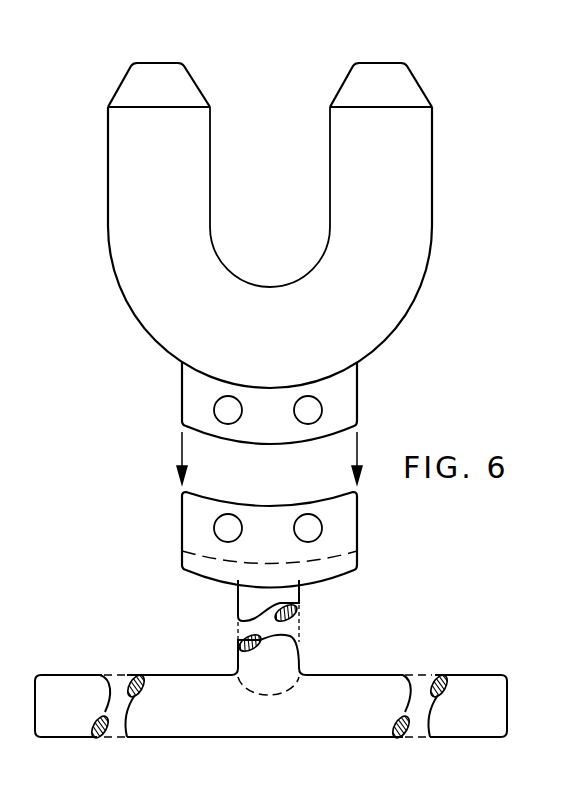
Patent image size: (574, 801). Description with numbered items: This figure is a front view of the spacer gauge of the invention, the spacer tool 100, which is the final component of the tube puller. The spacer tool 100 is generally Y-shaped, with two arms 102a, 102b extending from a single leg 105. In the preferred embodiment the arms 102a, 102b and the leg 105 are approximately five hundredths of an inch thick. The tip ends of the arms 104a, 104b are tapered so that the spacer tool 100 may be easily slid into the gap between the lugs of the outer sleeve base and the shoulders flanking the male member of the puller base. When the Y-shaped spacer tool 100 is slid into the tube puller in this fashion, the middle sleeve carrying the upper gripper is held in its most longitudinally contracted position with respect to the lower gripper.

The spacer tool 100 is at (76, 171).
The arm 102a is at (183, 171).
The arm 102b is at (415, 171).
The tip end of arm 104a is at (143, 73).
The tip end of arm 104b is at (393, 73).
The leg 105 is at (287, 656).